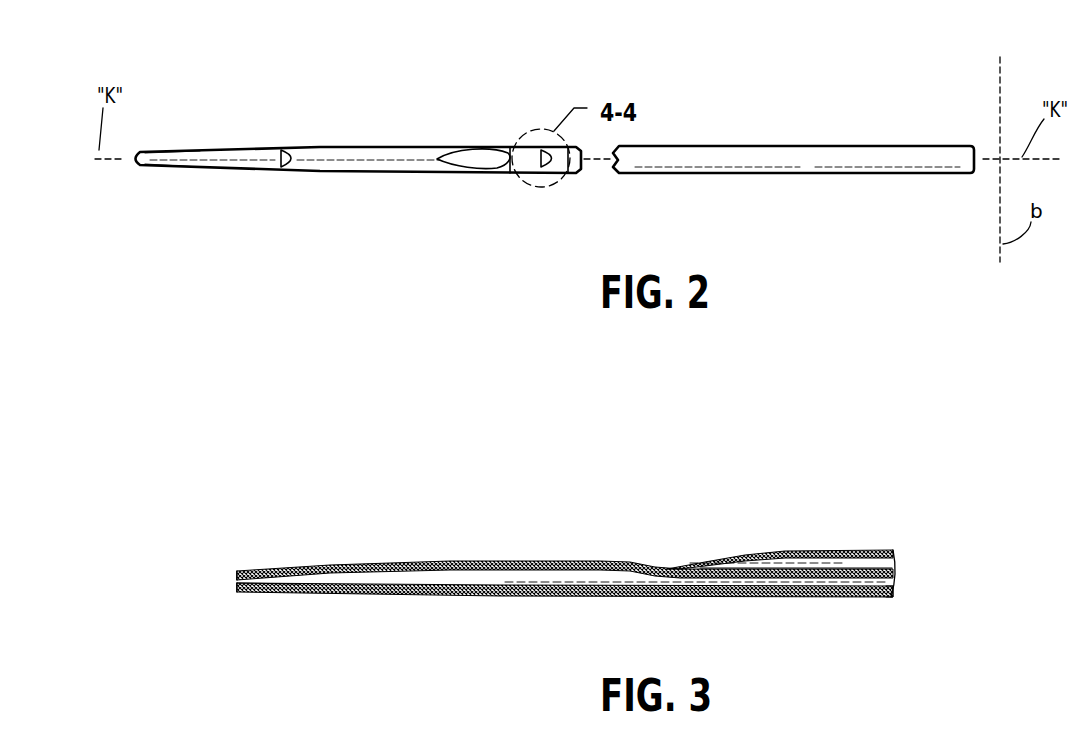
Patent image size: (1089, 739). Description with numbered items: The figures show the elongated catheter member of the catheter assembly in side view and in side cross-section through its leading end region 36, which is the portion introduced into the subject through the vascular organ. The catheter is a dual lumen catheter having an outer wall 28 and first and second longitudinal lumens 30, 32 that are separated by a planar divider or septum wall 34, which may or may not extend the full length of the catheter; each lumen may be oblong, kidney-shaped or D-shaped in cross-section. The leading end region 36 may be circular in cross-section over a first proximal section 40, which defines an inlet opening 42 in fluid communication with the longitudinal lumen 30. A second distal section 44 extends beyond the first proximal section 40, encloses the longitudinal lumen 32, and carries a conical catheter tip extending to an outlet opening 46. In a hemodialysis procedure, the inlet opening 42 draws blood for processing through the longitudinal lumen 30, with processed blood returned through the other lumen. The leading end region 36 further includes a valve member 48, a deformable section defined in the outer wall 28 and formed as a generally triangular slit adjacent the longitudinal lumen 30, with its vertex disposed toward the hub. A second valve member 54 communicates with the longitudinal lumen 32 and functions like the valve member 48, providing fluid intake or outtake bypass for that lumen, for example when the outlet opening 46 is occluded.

In FIG. 2, the outer wall 28 is at (650, 145).
In FIG. 3, the outer wall 28 is at (889, 551).
In FIG. 3, the first longitudinal lumen 30 is at (831, 563).
In FIG. 3, the second longitudinal lumen 32 is at (529, 576).
In FIG. 3, the septum wall 34 is at (871, 568).
In FIG. 2, the leading end region 36 is at (332, 203).
In FIG. 3, the leading end region 36 is at (496, 623).
In FIG. 2, the first proximal section 40 is at (477, 162).
In FIG. 3, the first proximal section 40 is at (885, 609).
In FIG. 2, the inlet opening 42 is at (234, 138).
In FIG. 3, the inlet opening 42 is at (376, 546).
In FIG. 2, the second distal section 44 is at (198, 172).
In FIG. 3, the second distal section 44 is at (275, 593).
In FIG. 3, the outlet opening 46 is at (237, 578).
In FIG. 2, the valve member 48 is at (543, 150).
In FIG. 2, the second valve member 54 is at (288, 152).